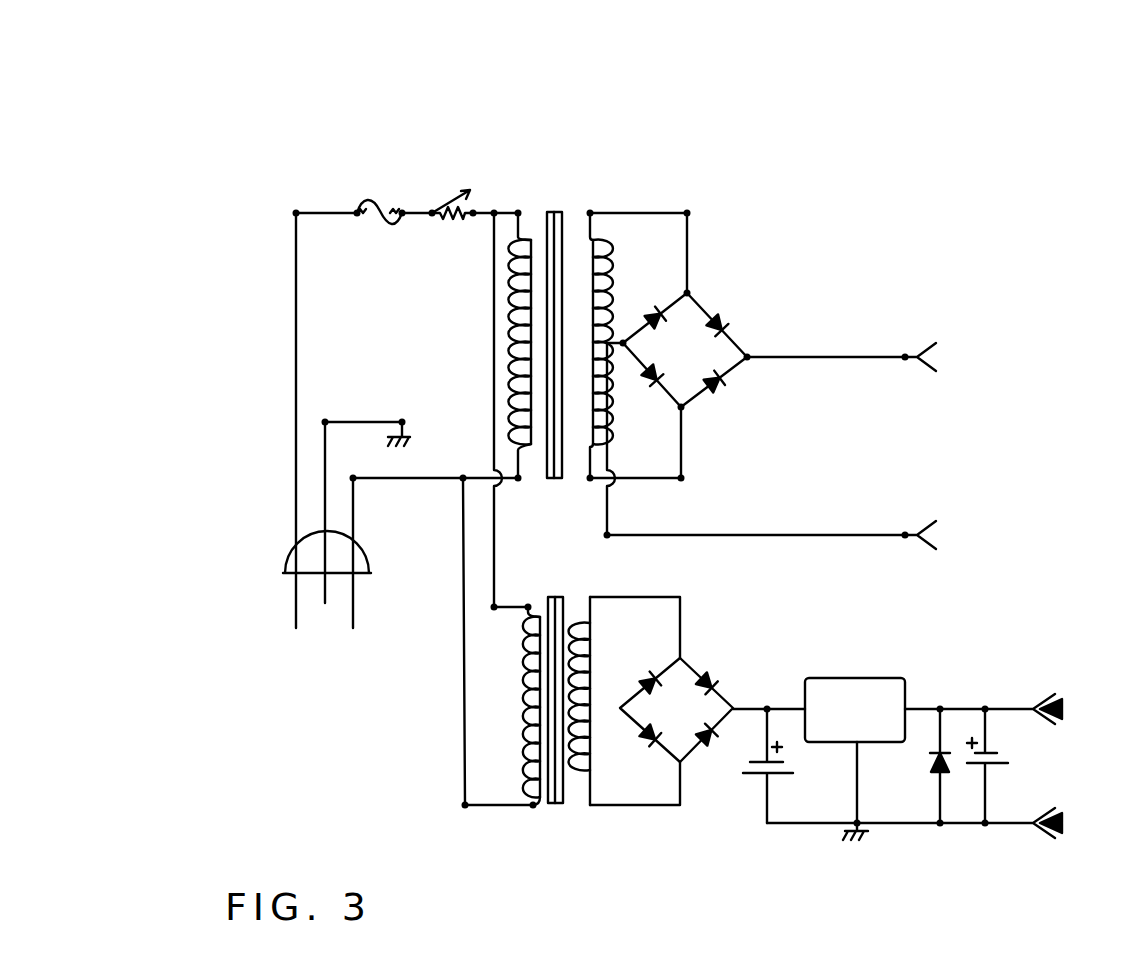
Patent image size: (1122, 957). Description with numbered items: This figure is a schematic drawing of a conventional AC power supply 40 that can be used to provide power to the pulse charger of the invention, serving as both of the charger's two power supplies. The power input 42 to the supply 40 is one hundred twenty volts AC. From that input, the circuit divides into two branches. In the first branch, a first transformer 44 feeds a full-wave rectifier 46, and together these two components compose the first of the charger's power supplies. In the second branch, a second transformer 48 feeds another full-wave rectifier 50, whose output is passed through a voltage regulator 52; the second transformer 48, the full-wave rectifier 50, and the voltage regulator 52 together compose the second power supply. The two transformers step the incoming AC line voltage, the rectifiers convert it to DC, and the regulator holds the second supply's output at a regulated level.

The AC power supply 40 is at (733, 116).
The power input 42 is at (277, 570).
The first transformer 44 is at (507, 283).
The full-wave rectifier 46 is at (678, 328).
The second transformer 48 is at (510, 670).
The full-wave rectifier 50 is at (667, 690).
The voltage regulator 52 is at (867, 703).